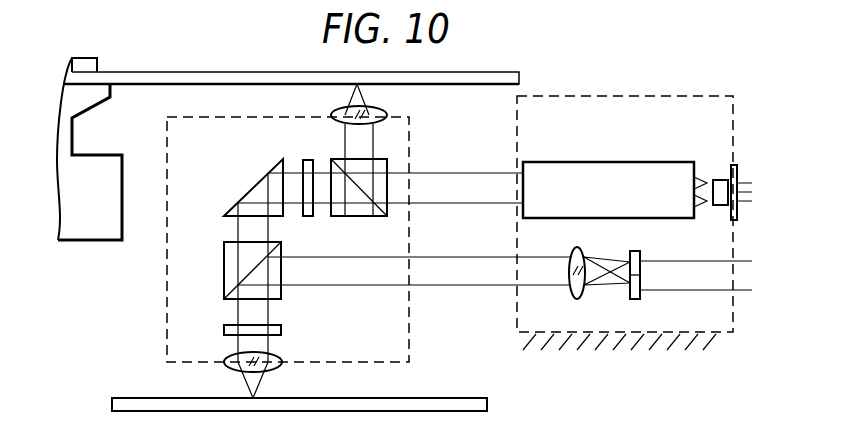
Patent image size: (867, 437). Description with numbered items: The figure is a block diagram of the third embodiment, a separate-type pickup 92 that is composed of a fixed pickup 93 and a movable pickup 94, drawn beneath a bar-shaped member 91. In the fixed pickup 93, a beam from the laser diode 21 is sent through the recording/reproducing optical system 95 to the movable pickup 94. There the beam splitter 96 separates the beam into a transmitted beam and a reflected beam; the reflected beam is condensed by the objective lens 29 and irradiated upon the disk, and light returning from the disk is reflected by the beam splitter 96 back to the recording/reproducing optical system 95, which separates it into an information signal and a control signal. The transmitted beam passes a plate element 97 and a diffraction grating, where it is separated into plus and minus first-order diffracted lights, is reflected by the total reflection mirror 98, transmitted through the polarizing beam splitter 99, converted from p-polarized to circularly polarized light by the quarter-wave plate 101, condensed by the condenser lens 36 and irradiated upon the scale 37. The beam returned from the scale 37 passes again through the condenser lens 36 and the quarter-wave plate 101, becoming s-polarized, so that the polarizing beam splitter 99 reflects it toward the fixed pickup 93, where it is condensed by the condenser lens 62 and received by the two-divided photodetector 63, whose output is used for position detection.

The bar / member 91 is at (527, 71).
The objective lens 29 is at (388, 114).
The beam splitter 96 is at (388, 165).
The plate 97 is at (314, 212).
The total reflection mirror 98 is at (252, 190).
The polarizing beam splitter 99 is at (224, 268).
The λ/4 plate 101 is at (283, 330).
The condenser lens 36 is at (283, 357).
The scale 37 is at (307, 398).
The movable pickup 94 is at (411, 307).
The fixed pickup 93 is at (517, 290).
The pickup 92 is at (505, 368).
The recording/reproducing optical system 95 is at (586, 162).
The laser diode 21 is at (713, 183).
The condenser lens 62 is at (582, 292).
The two-divided photodetector 63 is at (640, 295).